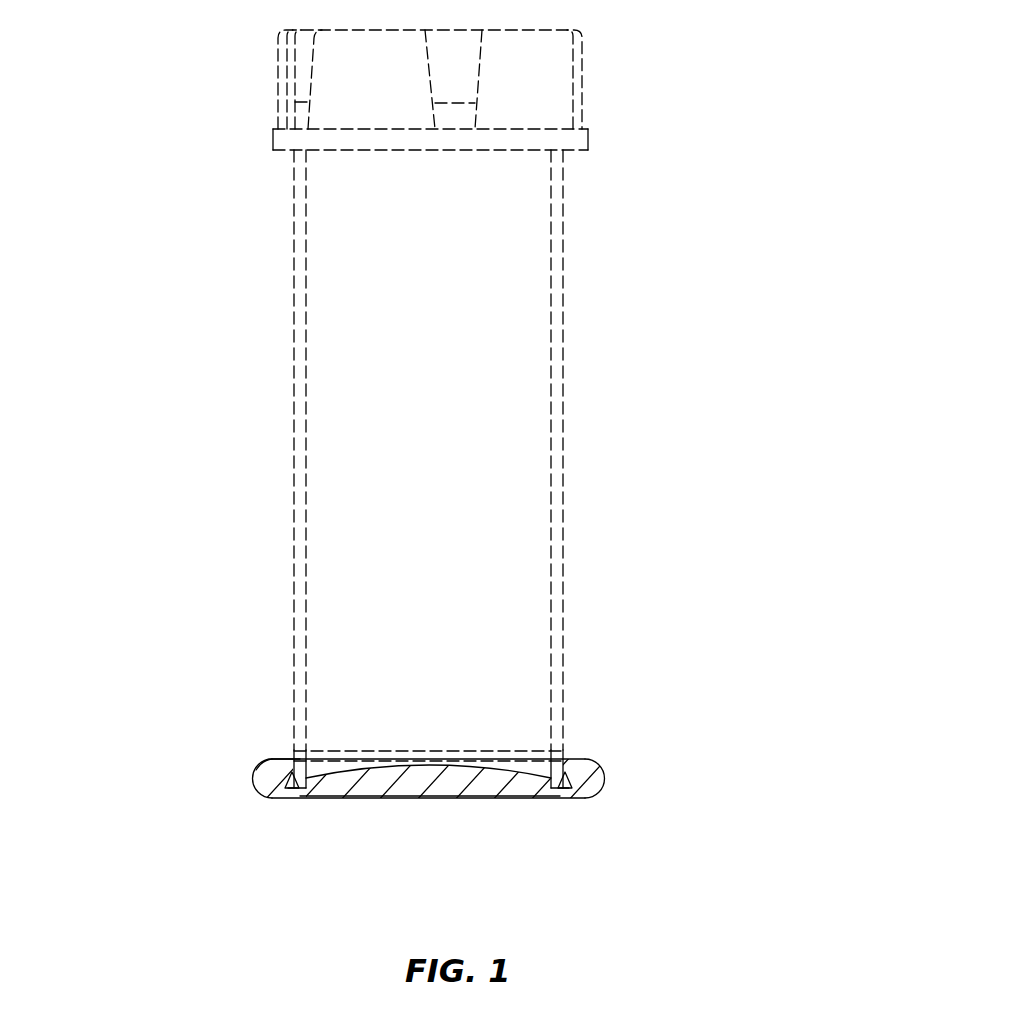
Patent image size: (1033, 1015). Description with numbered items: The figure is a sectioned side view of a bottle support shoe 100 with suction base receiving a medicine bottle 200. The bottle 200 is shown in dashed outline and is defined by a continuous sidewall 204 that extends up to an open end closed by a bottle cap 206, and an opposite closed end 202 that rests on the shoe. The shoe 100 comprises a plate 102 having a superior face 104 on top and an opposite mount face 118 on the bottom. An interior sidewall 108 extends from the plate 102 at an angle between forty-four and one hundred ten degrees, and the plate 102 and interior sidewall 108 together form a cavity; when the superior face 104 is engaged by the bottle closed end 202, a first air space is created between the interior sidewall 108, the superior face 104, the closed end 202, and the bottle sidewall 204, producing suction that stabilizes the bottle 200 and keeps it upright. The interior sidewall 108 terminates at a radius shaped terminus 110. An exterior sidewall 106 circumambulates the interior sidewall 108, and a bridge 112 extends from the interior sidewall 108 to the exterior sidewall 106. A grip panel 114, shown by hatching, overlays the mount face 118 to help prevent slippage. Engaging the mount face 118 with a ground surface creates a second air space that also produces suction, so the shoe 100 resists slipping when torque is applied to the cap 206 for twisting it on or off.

The bottle support shoe 100 is at (125, 675).
The plate 102 is at (624, 775).
The superior face 104 is at (336, 768).
The exterior sidewall 106 is at (252, 785).
The interior sidewall 108 is at (296, 778).
The radius shaped terminus 110 is at (565, 758).
The bridge 112 is at (270, 758).
The grip panel 114 is at (430, 800).
The mount face 118 is at (395, 800).
The medicine bottle 200 is at (223, 210).
The closed end 202 is at (563, 715).
The sidewall 204 is at (440, 455).
The bottle cap 206 is at (575, 87).